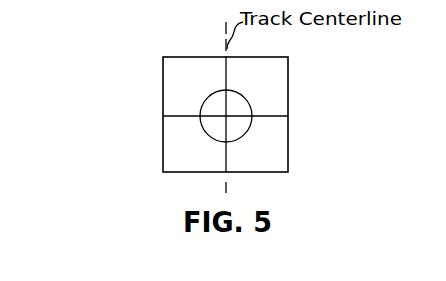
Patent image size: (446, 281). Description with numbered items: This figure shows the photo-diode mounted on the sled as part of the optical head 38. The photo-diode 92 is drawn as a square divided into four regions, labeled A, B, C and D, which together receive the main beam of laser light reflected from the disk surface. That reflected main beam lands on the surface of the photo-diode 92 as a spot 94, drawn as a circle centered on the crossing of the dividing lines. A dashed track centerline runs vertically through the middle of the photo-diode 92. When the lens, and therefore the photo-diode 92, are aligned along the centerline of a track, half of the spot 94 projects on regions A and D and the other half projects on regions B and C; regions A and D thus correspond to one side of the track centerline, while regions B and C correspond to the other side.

The optical head 38 is at (123, 47).
The photo-diode 92 is at (287, 78).
The spot 94 is at (243, 112).